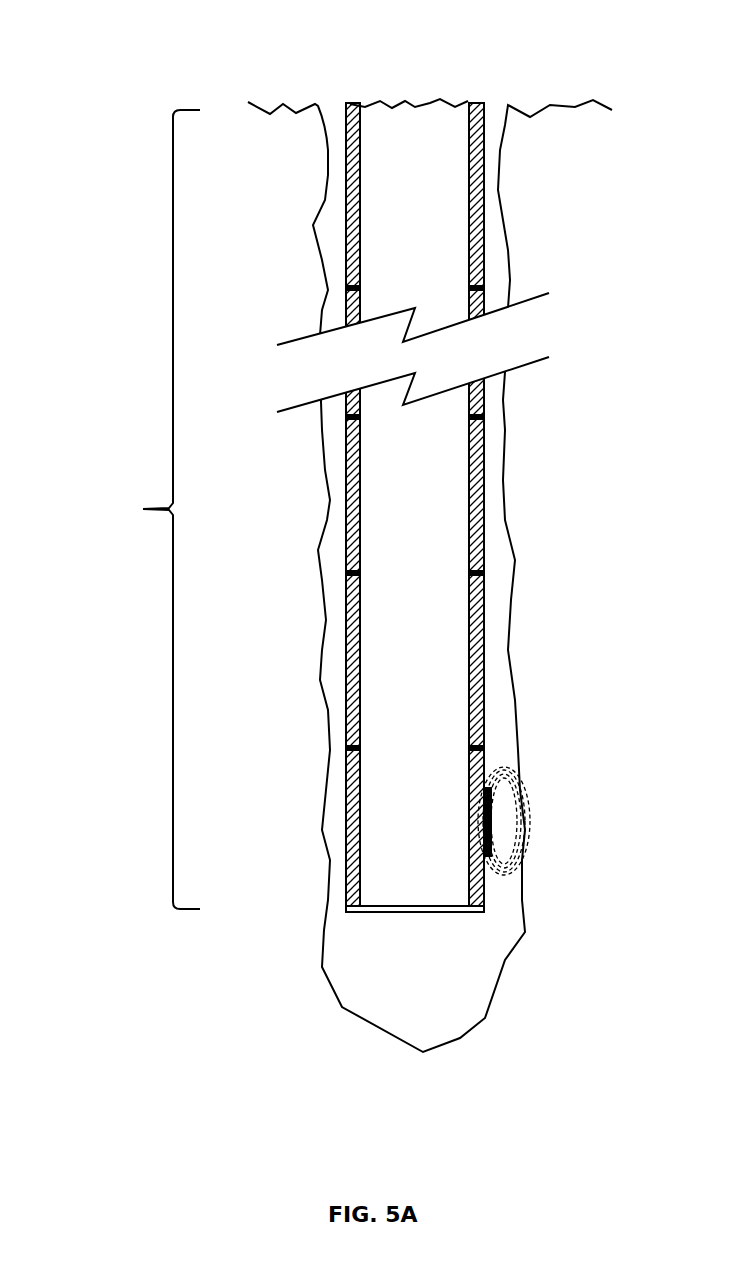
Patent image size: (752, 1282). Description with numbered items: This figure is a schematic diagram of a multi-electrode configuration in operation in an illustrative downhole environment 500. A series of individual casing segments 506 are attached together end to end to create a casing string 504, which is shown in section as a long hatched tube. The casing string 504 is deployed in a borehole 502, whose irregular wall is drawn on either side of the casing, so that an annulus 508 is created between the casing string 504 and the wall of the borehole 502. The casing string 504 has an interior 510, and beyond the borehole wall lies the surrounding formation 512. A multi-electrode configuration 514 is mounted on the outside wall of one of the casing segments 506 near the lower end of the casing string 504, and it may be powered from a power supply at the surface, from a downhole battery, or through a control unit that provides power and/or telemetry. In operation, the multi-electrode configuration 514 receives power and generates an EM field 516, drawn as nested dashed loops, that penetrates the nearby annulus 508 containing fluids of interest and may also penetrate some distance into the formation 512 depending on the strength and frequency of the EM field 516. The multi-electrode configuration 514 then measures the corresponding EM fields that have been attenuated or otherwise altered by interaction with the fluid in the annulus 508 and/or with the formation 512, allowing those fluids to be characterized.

The downhole environment 500 is at (142, 67).
The borehole 502 is at (328, 175).
The casing string 504 is at (145, 509).
The casing segment 506 is at (345, 218).
The annulus 508 is at (338, 262).
The interior 510 is at (430, 155).
The formation 512 is at (268, 760).
The multi-electrode configuration 514 is at (480, 837).
The EM field 516 is at (518, 868).